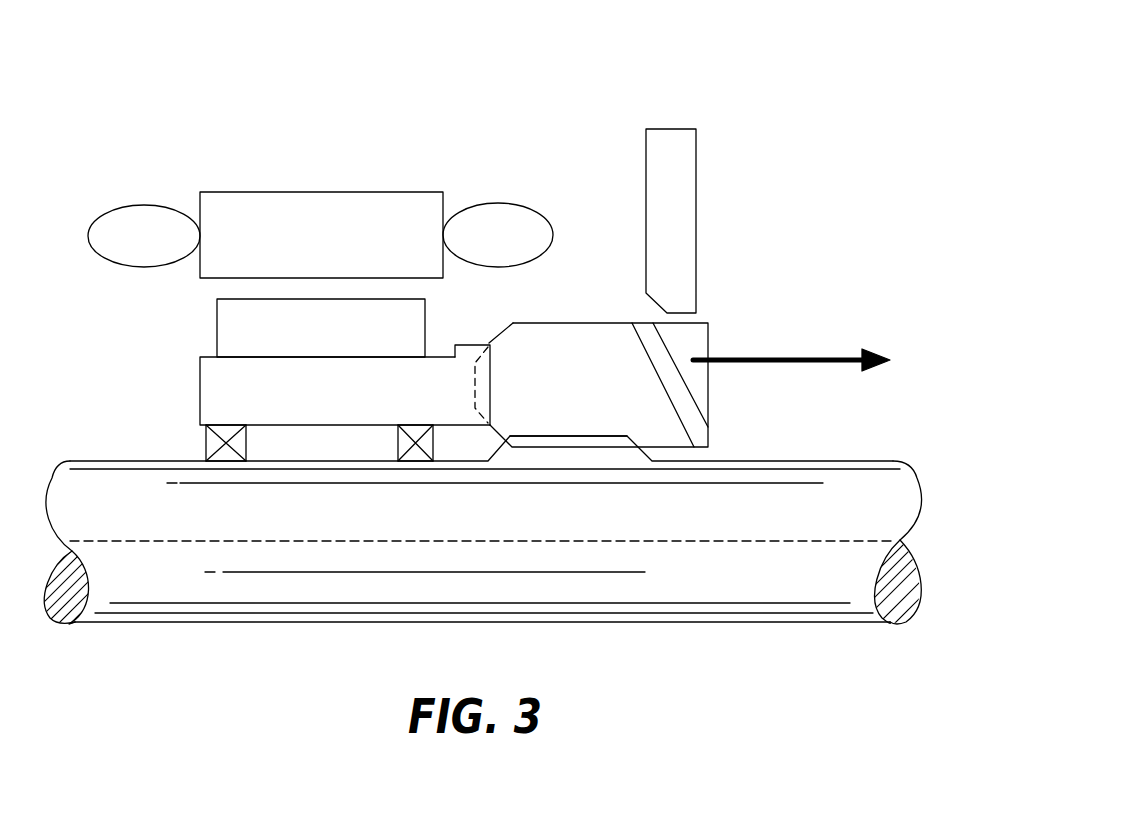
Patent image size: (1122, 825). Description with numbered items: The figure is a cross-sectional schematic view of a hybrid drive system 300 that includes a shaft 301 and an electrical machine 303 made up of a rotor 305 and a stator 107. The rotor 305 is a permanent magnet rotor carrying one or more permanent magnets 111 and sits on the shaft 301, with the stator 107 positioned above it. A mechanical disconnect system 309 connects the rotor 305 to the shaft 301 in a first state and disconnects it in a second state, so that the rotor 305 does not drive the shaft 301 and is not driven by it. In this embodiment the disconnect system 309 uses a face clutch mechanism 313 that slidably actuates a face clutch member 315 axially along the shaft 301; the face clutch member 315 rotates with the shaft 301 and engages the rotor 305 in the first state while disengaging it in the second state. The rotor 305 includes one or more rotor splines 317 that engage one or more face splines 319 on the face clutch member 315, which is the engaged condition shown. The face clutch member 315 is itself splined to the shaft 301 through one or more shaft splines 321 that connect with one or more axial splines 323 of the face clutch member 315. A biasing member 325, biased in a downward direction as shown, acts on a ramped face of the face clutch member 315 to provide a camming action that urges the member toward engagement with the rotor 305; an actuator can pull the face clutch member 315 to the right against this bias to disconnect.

The hybrid drive system 300 is at (874, 120).
The shaft 301 is at (718, 599).
The electrical machine 303 is at (157, 154).
The stator 107 is at (289, 200).
The permanent magnets 111 is at (339, 341).
The rotor 305 is at (215, 397).
The mechanical disconnect system 309 is at (746, 217).
The face clutch mechanism 313 is at (539, 276).
The face clutch member 315 is at (614, 401).
The rotor splines 317 is at (477, 388).
The face splines 319 is at (492, 377).
The shaft splines 321 is at (603, 447).
The axial splines 323 is at (608, 433).
The biasing member 325 is at (680, 167).